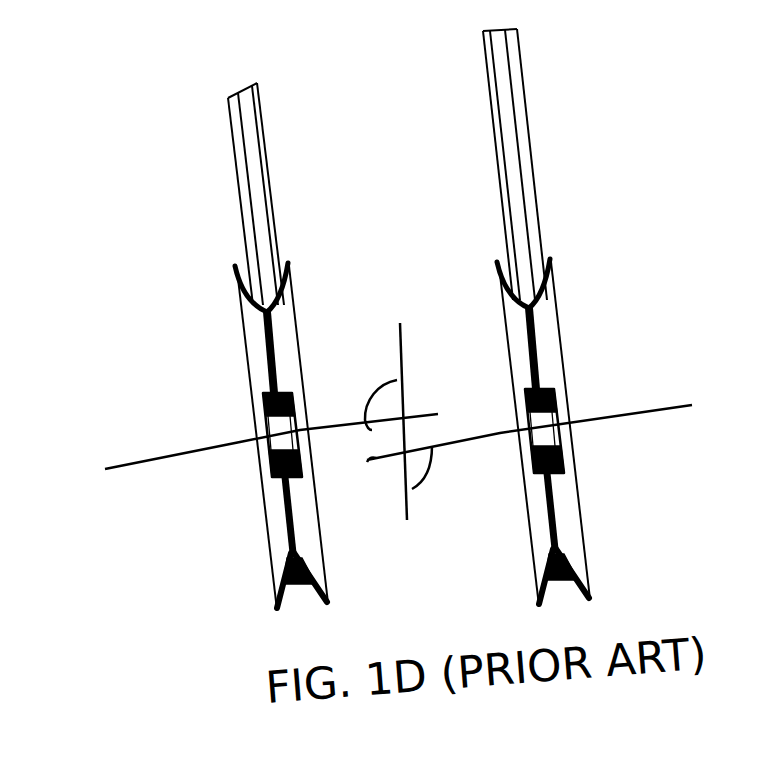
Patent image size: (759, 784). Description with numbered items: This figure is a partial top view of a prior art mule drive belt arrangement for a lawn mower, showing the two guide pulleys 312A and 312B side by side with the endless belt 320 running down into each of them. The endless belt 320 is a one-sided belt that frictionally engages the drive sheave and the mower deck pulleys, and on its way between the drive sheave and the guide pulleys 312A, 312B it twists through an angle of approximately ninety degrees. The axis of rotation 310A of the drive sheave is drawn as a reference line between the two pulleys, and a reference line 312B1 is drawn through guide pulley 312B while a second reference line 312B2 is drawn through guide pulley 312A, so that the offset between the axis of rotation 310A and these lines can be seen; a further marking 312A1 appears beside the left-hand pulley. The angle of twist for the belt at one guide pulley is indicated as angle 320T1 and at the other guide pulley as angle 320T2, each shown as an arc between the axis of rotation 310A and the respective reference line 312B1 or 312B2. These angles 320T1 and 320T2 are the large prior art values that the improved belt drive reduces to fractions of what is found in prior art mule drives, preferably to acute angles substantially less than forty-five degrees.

The endless belt 320 is at (505, 158).
The guide pulley 312A is at (527, 540).
The guide pulley 312B is at (258, 558).
The first sleeve portion 312A1 is at (44, 263).
The second sleeve reference line 312B1 is at (145, 463).
The second sleeve reference line 312B2 is at (602, 422).
The axis of rotation 310A is at (402, 355).
The angle of twist 320T1 is at (378, 392).
The angle of twist 320T2 is at (412, 489).